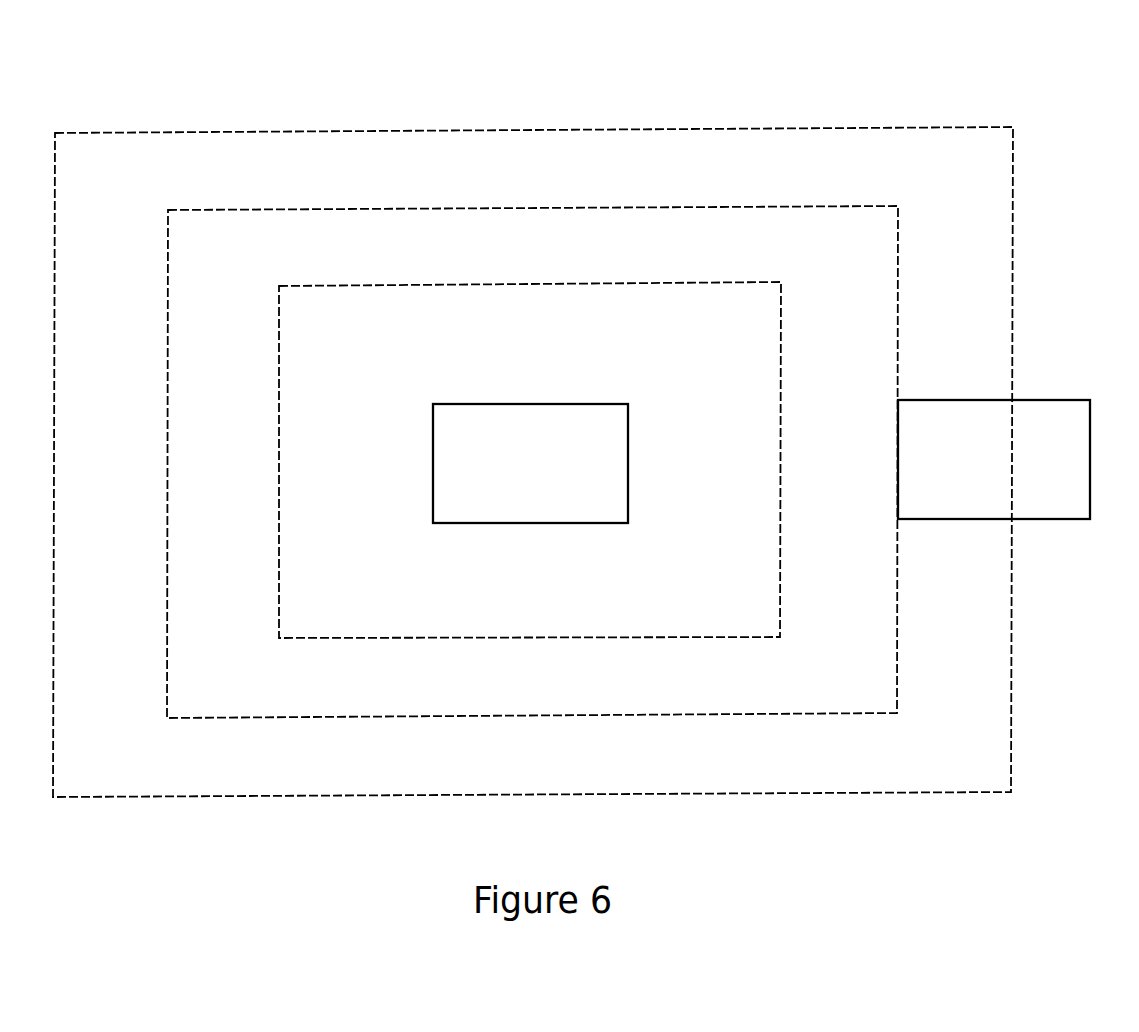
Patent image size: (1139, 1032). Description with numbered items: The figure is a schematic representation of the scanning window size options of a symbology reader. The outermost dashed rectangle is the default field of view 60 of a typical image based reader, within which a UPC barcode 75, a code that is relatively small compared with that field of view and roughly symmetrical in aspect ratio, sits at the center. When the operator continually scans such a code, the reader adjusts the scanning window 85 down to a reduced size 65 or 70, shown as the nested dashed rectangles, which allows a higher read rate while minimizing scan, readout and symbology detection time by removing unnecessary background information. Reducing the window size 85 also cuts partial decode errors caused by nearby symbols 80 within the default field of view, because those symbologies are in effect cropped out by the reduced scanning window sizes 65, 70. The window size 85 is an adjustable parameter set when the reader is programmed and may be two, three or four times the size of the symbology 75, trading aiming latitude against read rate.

The default field of view 60 is at (917, 125).
The reduced size scanning window 65 is at (795, 202).
The reduced size scanning window 70 is at (738, 277).
The UPC barcode 75 is at (575, 400).
The nearby symbols 80 is at (1043, 392).
The scanning window 85 is at (440, 103).